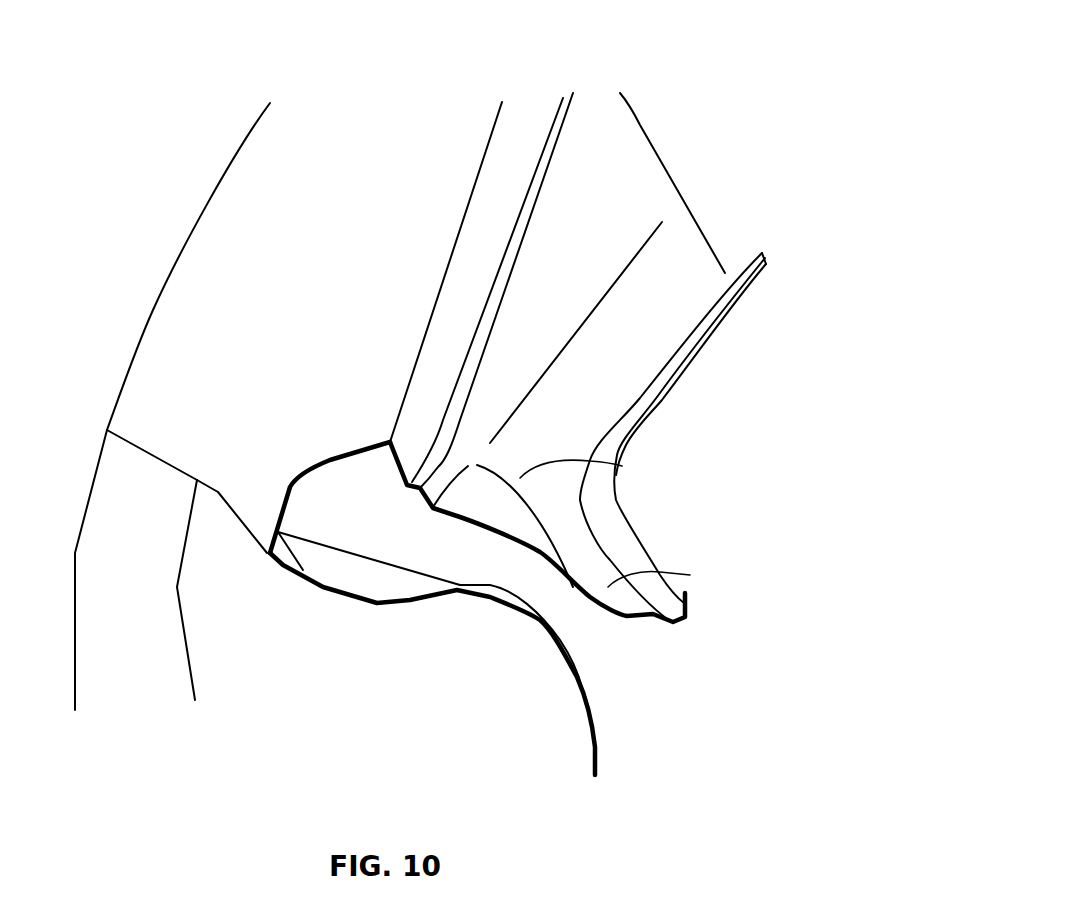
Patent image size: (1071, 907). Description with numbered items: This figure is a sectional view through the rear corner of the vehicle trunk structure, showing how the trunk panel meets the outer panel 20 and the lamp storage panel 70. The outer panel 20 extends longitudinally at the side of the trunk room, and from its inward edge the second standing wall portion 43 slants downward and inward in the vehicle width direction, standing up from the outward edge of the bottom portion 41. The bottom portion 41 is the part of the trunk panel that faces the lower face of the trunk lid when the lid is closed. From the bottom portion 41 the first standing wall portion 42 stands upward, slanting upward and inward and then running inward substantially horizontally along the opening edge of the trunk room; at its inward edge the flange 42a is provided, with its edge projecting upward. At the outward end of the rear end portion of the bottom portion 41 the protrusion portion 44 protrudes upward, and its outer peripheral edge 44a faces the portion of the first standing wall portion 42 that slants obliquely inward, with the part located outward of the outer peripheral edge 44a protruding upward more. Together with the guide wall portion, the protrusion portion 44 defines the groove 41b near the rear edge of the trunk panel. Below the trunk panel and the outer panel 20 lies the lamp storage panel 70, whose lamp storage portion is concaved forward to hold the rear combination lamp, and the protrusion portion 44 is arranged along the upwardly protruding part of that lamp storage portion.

The outer panel 20 is at (187, 318).
The second standing wall portion 43 is at (600, 170).
The bottom portion 41 is at (653, 258).
The first standing wall portion 42 is at (638, 397).
The flange 42a is at (687, 350).
The protrusion portion 44 is at (532, 520).
The outer peripheral edge 44a is at (622, 466).
The groove 41b is at (690, 575).
The lamp storage panel 70 is at (590, 708).